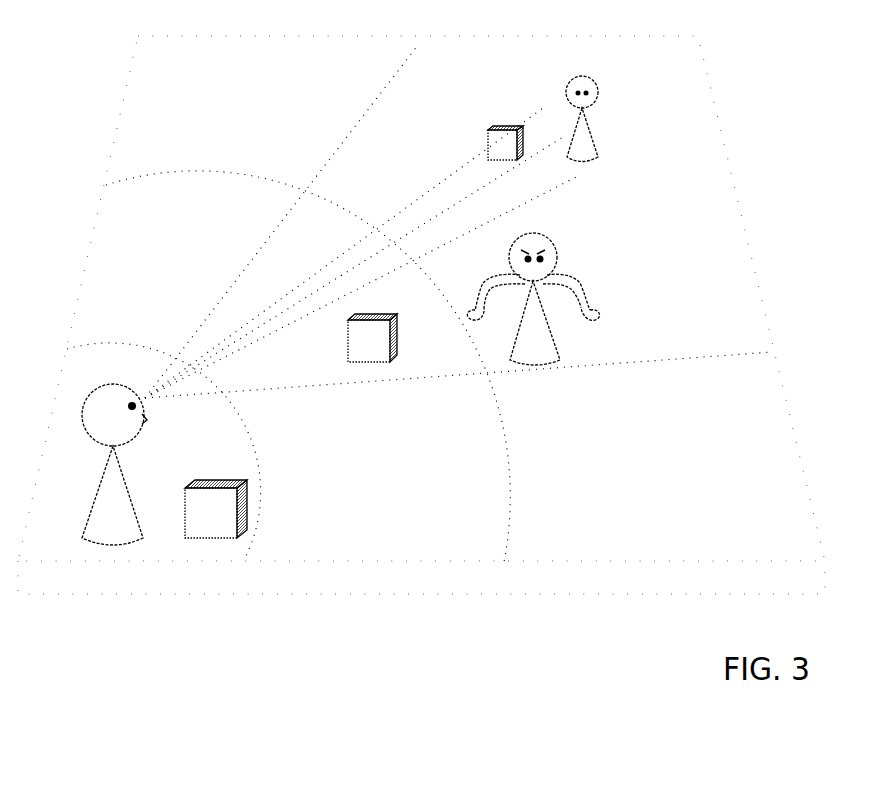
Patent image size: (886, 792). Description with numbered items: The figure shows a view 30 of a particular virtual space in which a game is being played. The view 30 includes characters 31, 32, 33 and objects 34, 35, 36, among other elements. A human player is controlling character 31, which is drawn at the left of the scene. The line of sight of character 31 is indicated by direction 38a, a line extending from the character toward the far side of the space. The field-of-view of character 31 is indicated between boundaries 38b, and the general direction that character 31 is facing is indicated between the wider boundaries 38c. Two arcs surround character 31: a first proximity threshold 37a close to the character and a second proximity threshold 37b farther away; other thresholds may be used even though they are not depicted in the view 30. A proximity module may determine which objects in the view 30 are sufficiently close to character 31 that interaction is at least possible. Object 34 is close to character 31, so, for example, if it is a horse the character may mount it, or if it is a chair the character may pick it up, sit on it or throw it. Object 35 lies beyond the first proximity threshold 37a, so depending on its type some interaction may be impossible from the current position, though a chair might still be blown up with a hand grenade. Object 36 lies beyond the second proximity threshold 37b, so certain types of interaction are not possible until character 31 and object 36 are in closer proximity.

The view 30 is at (148, 645).
The character 31 is at (114, 464).
The character 32 is at (533, 299).
The character 33 is at (595, 119).
The object 34 is at (216, 509).
The object 35 is at (372, 338).
The object 36 is at (489, 157).
The first proximity threshold 37a is at (164, 439).
The second proximity threshold 37b is at (308, 357).
The direction 38a is at (477, 190).
The boundaries 38b is at (438, 184).
The boundaries 38c is at (397, 84).